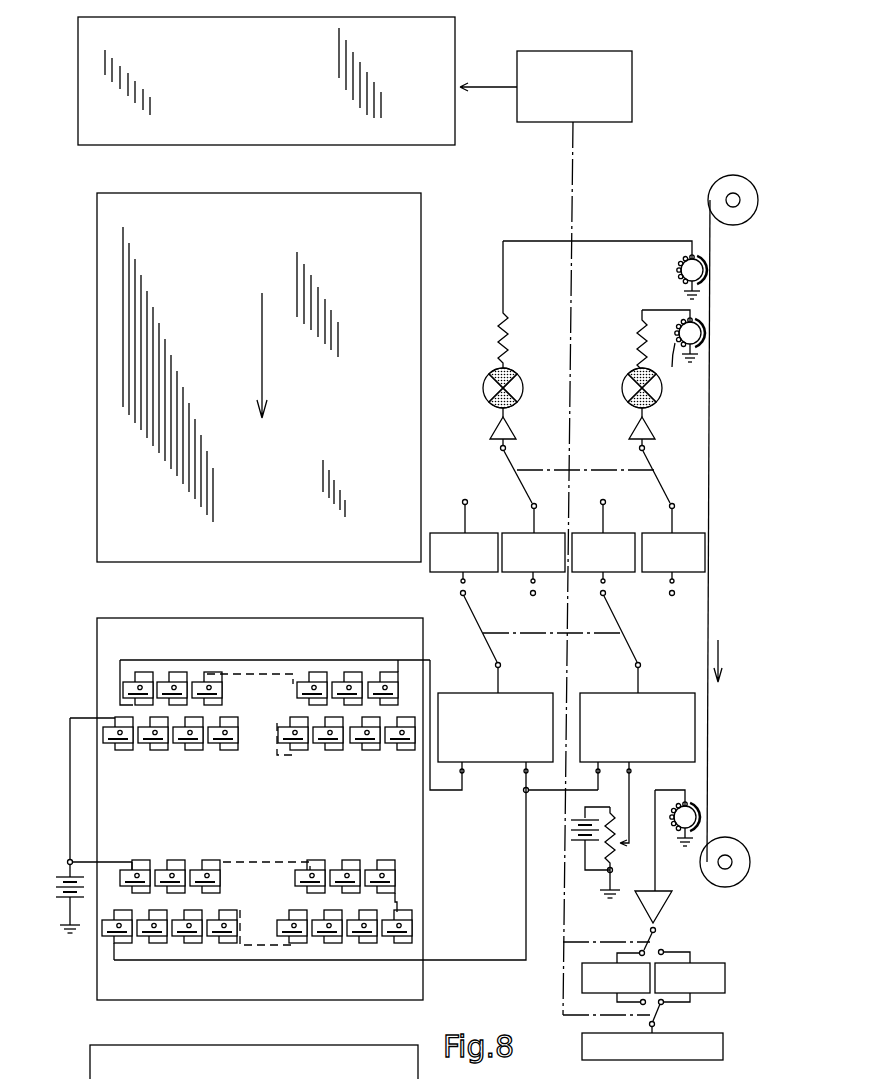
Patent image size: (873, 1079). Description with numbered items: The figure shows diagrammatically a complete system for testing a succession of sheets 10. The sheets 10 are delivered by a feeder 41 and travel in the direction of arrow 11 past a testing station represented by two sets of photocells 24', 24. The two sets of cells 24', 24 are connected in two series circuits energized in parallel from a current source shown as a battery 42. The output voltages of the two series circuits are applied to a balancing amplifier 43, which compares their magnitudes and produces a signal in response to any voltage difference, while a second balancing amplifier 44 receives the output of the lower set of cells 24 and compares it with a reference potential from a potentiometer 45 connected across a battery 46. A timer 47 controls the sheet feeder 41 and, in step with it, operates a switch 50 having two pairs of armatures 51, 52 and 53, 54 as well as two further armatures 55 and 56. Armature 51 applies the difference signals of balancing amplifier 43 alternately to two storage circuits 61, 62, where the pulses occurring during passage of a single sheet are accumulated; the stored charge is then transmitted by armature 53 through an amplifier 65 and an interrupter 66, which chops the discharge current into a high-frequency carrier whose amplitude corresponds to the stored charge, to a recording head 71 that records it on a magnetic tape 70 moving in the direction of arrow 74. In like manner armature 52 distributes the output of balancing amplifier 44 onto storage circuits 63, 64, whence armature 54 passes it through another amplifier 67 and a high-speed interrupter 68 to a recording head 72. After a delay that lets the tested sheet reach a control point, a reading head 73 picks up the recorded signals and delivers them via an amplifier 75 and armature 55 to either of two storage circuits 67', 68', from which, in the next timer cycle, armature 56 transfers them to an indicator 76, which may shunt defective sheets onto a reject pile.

The sheet 10 is at (153, 550).
The arrow 11 is at (262, 340).
The photocells 24 is at (242, 910).
The photocells 24' is at (266, 729).
The feeder 41 is at (148, 137).
The battery 42 is at (66, 862).
The balancing amplifier 43 is at (487, 765).
The balancing amplifier 44 is at (675, 690).
The potentiometer 45 is at (612, 852).
The battery 46 is at (576, 834).
The timer 47 is at (626, 116).
The switch 50 is at (585, 193).
The armature 51 is at (478, 628).
The armature 52 is at (622, 625).
The armature 53 is at (520, 483).
The armature 54 is at (675, 478).
The armature 55 is at (645, 935).
The armature 56 is at (662, 1018).
The storage circuit 61 is at (445, 572).
The storage circuit 62 is at (520, 572).
The storage circuit 63 is at (618, 532).
The storage circuit 64 is at (685, 532).
The amplifier 65 is at (492, 431).
The interrupter 66 is at (484, 382).
The amplifier 67 is at (624, 429).
The storage circuit 67' is at (586, 984).
The high-speed interrupter 68 is at (627, 359).
The storage circuit 68' is at (710, 984).
The magnetic tape 70 is at (710, 445).
The recording head 71 is at (694, 252).
The recording head 72 is at (673, 347).
The reading head 73 is at (690, 806).
The arrow 74 is at (720, 650).
The amplifier 75 is at (672, 906).
The indicator 76 is at (723, 1047).